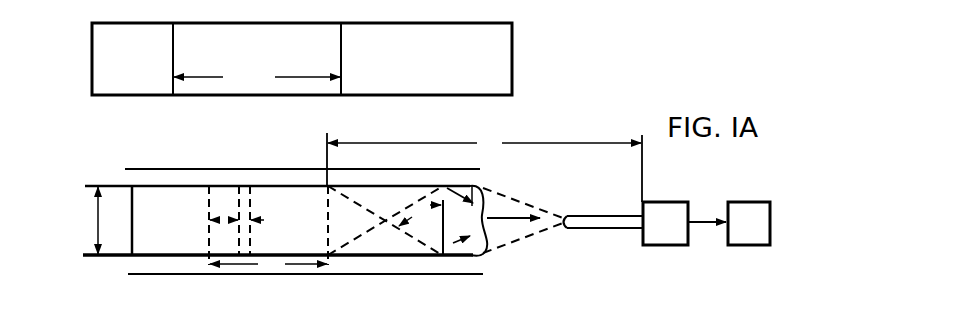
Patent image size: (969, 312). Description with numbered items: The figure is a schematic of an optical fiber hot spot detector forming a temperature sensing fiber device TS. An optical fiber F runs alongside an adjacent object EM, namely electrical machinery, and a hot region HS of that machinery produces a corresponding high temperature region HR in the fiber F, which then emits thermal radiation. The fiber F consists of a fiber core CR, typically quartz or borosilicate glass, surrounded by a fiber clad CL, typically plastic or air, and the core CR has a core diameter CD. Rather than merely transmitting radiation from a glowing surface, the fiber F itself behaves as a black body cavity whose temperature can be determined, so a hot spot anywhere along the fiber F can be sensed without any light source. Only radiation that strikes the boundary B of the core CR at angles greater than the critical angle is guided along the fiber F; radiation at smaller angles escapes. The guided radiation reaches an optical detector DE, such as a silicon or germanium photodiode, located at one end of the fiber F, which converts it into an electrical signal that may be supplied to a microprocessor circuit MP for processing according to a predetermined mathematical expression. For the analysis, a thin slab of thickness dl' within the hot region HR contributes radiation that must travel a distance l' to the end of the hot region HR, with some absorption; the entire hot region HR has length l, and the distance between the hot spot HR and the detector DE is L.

The electrical machinery EM is at (284, 51).
The hot region HS is at (257, 77).
The high temperature region HR is at (220, 200).
The fiber clad CL is at (262, 176).
The core diameter CD is at (101, 220).
The fiber core CR is at (170, 243).
The temperature sensing fiber device TS is at (524, 294).
The distance between hot spot and detector L is at (484, 167).
The length of hot region l is at (268, 264).
The distance to end of hot region l' is at (224, 221).
The slab thickness dl' is at (271, 221).
The optical fiber F is at (366, 241).
The boundary B is at (440, 255).
The optical detector DE is at (665, 223).
The microprocessor circuit MP is at (729, 223).